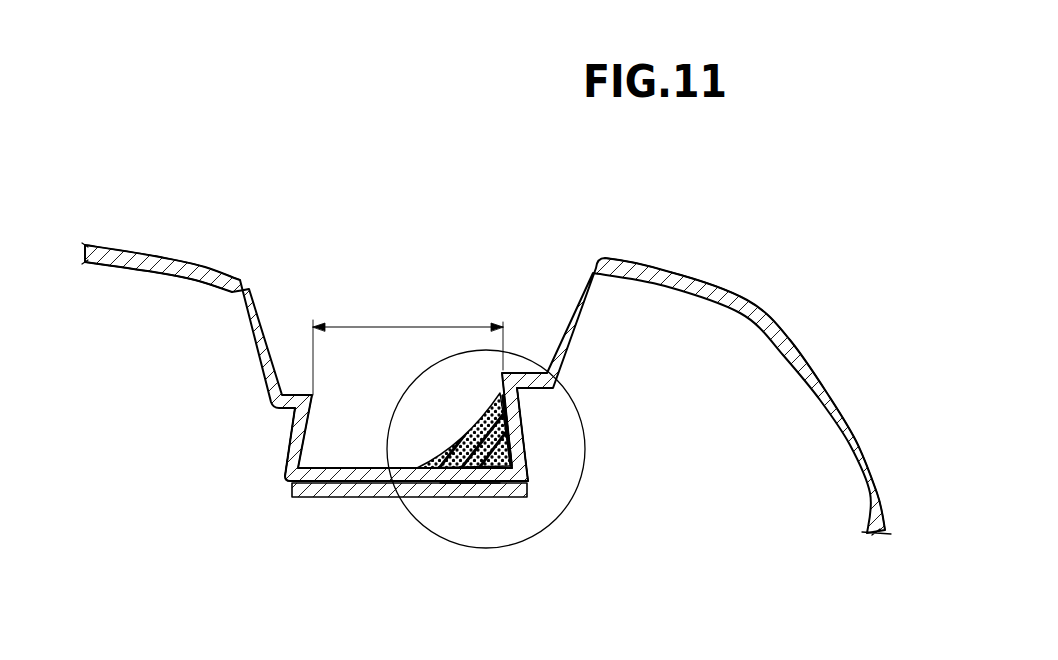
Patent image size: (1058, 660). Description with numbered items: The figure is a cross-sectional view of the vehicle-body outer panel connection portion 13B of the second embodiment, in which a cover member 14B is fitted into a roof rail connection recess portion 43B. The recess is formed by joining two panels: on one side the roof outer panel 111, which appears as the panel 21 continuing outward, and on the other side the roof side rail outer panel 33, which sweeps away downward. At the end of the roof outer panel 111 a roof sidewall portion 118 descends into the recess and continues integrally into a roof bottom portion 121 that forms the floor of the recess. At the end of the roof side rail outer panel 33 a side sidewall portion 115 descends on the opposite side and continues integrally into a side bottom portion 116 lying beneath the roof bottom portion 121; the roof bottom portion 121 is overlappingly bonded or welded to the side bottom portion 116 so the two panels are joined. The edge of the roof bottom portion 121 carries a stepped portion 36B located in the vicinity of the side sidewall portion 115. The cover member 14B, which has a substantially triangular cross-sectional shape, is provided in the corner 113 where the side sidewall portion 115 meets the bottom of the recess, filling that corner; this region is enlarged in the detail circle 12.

The enlarged detail region 12 is at (522, 357).
The outer panel 21 is at (143, 247).
The roof side rail outer panel 33 is at (648, 265).
The vehicle-body outer panel connection portion 13B is at (317, 283).
The cover member 14B is at (447, 413).
The connection recess portion 43B is at (453, 327).
The roof outer panel 111 is at (348, 467).
The roof bottom portion 121 is at (380, 467).
The roof sidewall portion 118 is at (293, 443).
The side sidewall portion 115 is at (522, 443).
The side bottom portion 116 is at (358, 497).
The stepped portion 36B is at (466, 490).
The corner 113 is at (520, 485).